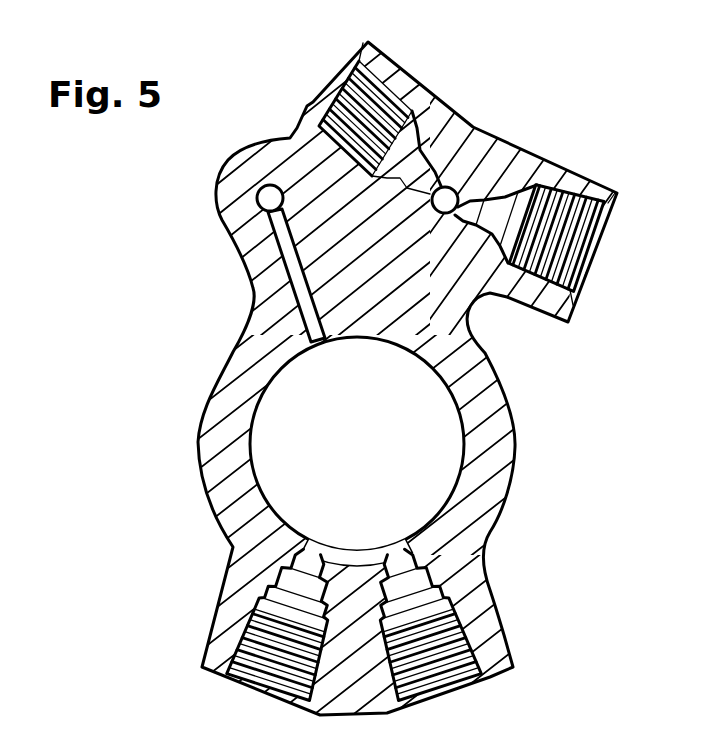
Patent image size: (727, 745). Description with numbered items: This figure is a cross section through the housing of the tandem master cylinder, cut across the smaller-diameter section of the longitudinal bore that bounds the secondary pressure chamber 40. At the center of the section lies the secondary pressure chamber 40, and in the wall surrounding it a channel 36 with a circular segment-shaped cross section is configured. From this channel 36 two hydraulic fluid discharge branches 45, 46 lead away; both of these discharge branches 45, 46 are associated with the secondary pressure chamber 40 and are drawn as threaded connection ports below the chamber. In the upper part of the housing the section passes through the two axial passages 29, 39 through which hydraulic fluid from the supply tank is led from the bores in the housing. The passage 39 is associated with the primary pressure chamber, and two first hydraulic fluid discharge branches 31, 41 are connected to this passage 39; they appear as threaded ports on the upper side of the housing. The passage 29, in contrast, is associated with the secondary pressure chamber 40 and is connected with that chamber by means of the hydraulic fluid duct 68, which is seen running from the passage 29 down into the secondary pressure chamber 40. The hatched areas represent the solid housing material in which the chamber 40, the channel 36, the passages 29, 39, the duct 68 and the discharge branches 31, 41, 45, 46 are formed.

The axial passage 29 is at (260, 197).
The first hydraulic fluid discharge branch 31 is at (313, 103).
The channel 36 is at (352, 566).
The axial passage 39 is at (444, 193).
The secondary pressure chamber 40 is at (437, 457).
The first hydraulic fluid discharge branch 41 is at (568, 265).
The hydraulic fluid discharge branch 45 is at (293, 680).
The hydraulic fluid discharge branch 46 is at (457, 667).
The hydraulic fluid duct 68 is at (293, 268).